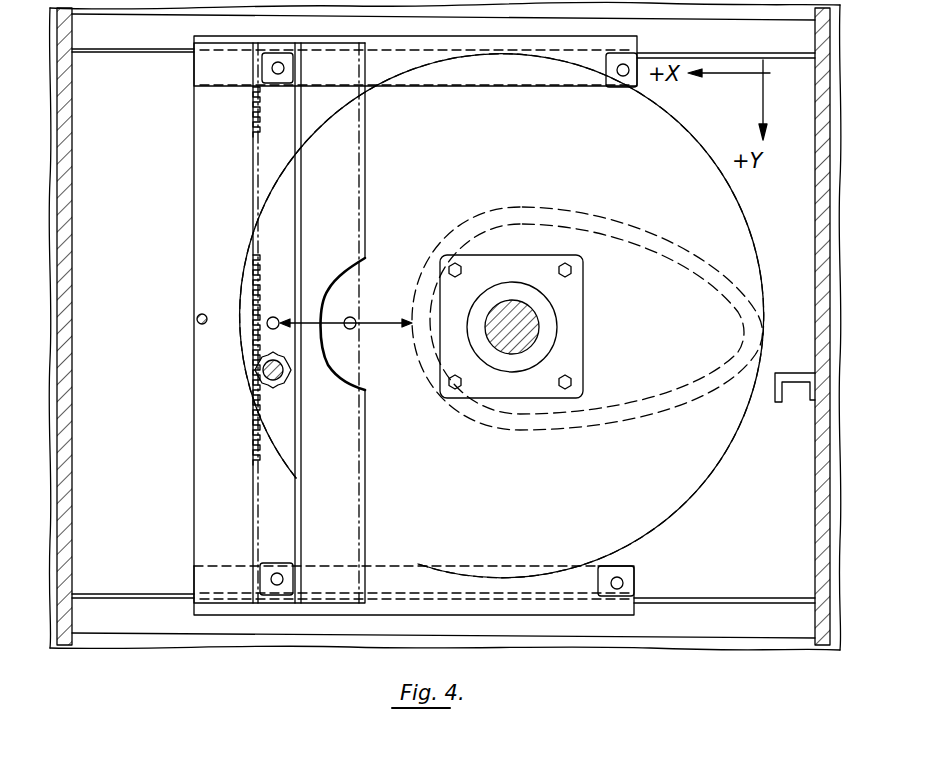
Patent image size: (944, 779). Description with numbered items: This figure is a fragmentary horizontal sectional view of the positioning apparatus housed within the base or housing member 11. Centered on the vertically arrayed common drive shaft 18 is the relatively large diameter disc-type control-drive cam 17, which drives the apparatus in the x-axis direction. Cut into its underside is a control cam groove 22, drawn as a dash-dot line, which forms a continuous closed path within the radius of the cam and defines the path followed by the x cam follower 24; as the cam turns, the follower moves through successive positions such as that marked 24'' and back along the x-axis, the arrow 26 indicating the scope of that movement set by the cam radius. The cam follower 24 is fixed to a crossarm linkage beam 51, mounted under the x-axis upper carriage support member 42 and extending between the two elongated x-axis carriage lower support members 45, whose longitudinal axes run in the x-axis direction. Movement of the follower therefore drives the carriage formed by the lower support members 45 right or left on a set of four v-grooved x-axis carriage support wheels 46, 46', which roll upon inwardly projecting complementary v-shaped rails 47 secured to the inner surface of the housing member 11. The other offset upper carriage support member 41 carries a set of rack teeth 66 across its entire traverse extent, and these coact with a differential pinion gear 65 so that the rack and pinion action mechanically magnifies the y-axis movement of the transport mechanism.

The base or housing member 11 is at (73, 428).
The disc-type control-drive cam 17 is at (717, 490).
The common drive shaft 18 is at (496, 310).
The control cam groove 22 is at (484, 426).
The x cam follower 24 is at (346, 347).
The cam follower position 24'' is at (240, 309).
The arrow 26 is at (313, 320).
The x-axis upper carriage support member 41 is at (194, 222).
The x-axis upper carriage support member 42 is at (366, 156).
The x-axis carriage lower support members 45 is at (196, 37).
The x-axis carriage support wheels 46 is at (447, 556).
The x-axis carriage support wheels 46' is at (422, 86).
The v-shaped rails 47 is at (95, 50).
The crossarm linkage beam 51 is at (296, 136).
The differential pinion gear 65 is at (258, 368).
The rack teeth 66 is at (256, 286).